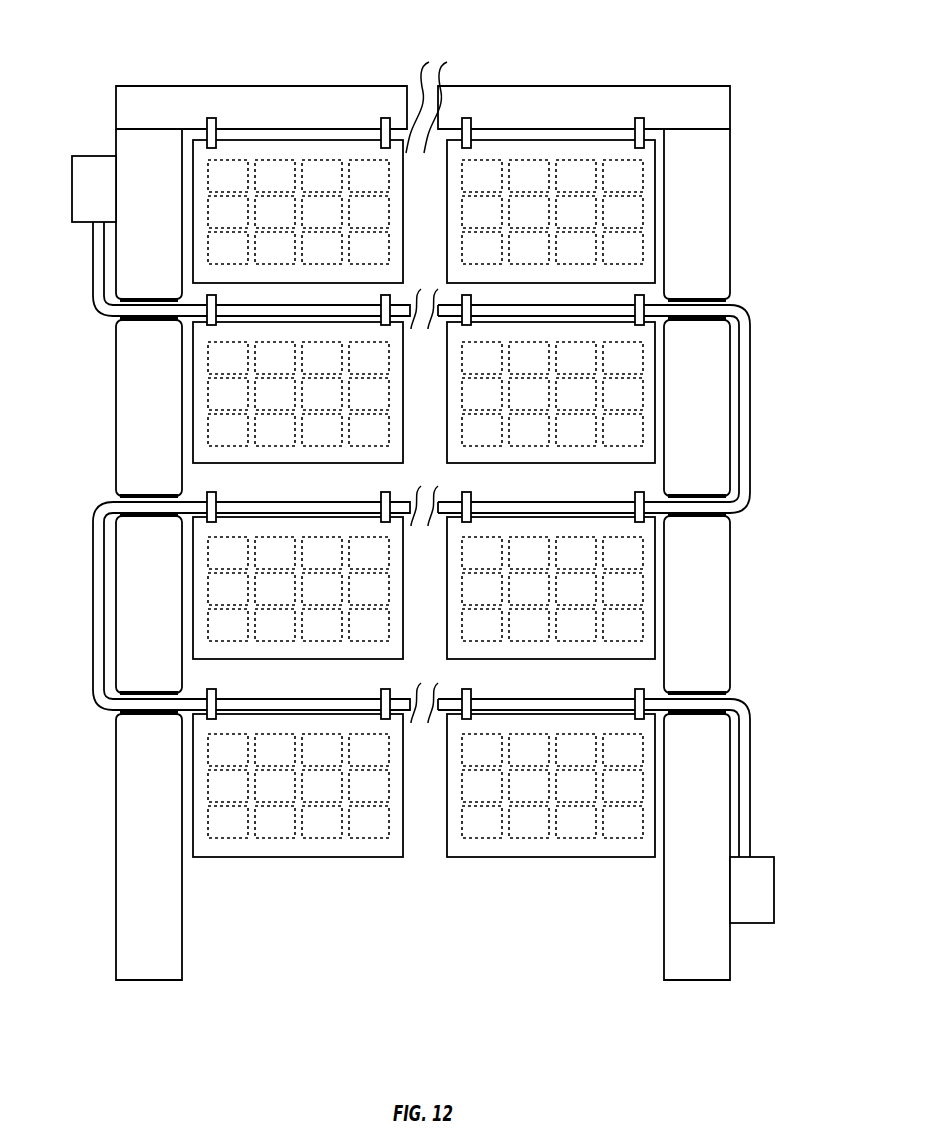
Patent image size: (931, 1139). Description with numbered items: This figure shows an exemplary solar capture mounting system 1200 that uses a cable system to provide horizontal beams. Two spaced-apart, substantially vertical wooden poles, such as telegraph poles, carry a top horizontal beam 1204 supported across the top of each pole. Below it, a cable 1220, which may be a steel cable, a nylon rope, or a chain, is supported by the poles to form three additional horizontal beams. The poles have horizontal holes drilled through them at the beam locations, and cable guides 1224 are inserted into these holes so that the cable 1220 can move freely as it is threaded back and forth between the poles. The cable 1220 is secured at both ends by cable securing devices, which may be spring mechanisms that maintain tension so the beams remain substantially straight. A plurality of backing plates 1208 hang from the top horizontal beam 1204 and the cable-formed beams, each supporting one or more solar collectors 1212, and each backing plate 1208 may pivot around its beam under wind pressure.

The solar capture mounting system 1200 is at (96, 30).
The top horizontal beam 1204 is at (672, 86).
The backing plate 1208 is at (457, 858).
The solar collector 1212 is at (302, 840).
The cable 1220 is at (753, 322).
The cable guide 1224 is at (732, 298).